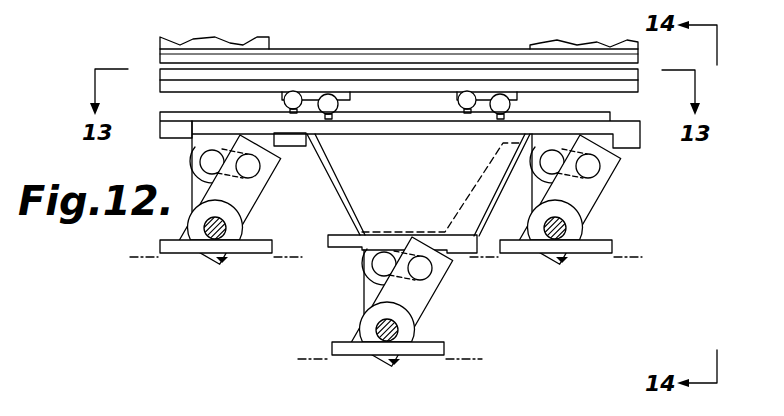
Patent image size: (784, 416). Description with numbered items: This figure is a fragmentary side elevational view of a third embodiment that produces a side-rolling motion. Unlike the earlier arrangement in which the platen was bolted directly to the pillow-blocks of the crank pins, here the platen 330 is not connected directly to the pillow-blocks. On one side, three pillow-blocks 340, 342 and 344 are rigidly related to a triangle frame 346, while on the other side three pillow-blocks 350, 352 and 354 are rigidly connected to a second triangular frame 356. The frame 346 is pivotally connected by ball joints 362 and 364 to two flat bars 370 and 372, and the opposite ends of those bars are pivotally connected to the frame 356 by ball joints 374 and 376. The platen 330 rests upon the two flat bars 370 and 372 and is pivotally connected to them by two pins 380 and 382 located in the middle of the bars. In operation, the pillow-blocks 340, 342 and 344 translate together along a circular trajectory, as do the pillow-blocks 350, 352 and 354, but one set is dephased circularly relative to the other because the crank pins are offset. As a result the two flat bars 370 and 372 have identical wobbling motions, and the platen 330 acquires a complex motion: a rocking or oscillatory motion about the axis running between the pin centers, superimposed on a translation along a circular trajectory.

The platen 330 is at (654, 117).
The pillow-block 340 is at (396, 185).
The pillow-block 342 is at (622, 150).
The pillow-block 344 is at (453, 262).
The triangle frame 346 is at (325, 228).
The pillow-block 350 is at (187, 158).
The pillow-block 352 is at (527, 140).
The pillow-block 354 is at (391, 301).
The second triangular frame 356 is at (347, 203).
The ball joint 362 is at (329, 119).
The ball joint 364 is at (497, 119).
The flat bar 370 is at (350, 97).
The flat bar 372 is at (527, 93).
The ball joint 374 is at (283, 94).
The ball joint 376 is at (452, 100).
The pin 380 is at (320, 77).
The pin 382 is at (495, 75).